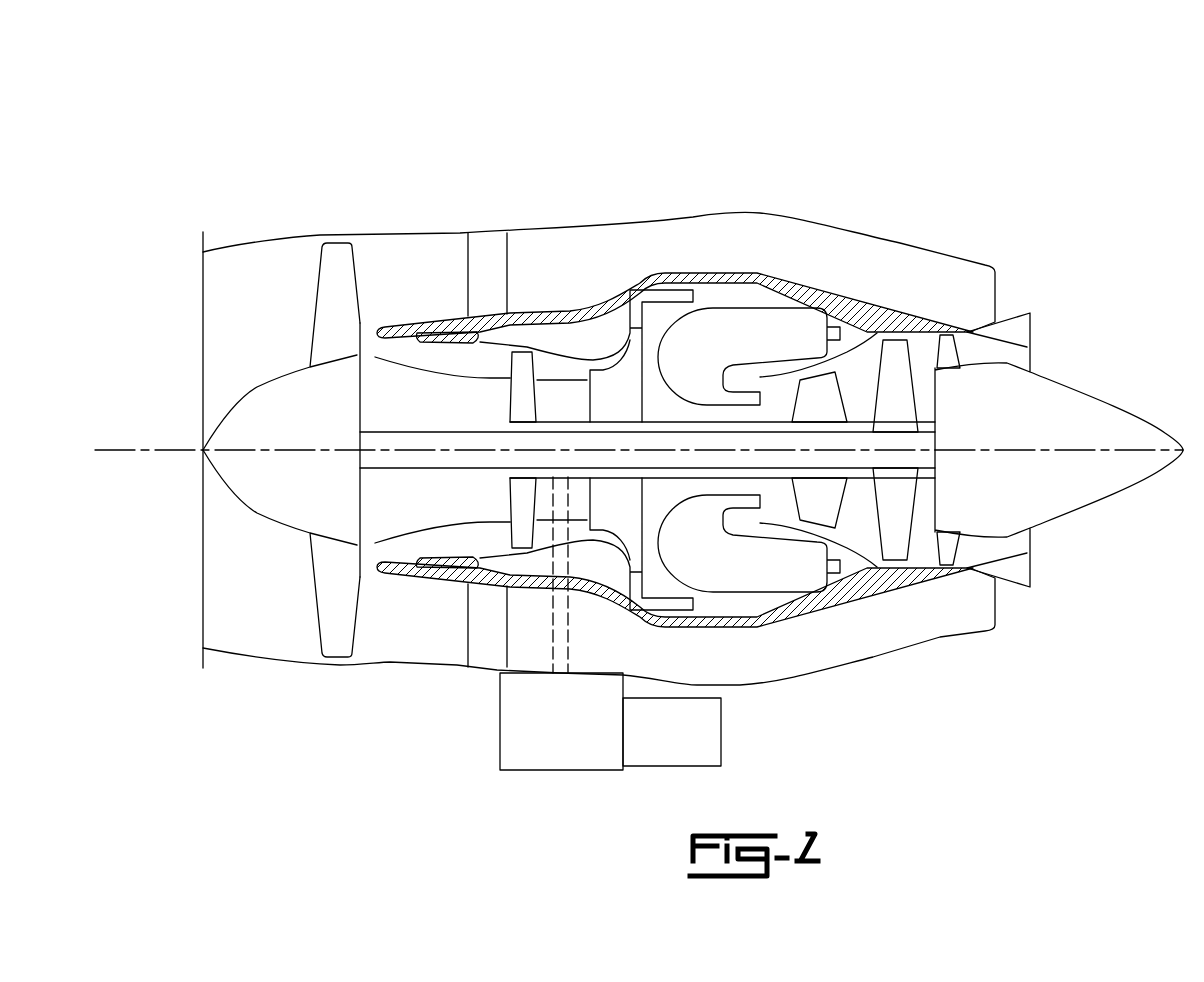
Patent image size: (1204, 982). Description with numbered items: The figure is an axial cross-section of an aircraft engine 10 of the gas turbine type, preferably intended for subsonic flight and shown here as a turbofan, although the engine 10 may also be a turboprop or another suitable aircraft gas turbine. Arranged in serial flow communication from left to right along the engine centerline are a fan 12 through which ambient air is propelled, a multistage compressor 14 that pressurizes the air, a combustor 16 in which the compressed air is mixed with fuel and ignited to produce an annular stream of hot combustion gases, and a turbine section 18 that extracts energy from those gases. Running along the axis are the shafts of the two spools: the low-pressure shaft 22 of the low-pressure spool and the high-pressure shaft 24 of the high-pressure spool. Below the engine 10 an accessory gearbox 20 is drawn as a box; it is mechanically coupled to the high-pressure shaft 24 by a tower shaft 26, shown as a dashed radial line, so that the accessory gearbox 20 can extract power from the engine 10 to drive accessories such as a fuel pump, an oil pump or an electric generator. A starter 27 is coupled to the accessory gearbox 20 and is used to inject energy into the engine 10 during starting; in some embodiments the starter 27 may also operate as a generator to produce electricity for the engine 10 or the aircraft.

The aircraft engine 10 is at (878, 155).
The fan 12 is at (332, 583).
The multistage compressor 14 is at (568, 365).
The combustor 16 is at (743, 325).
The turbine section 18 is at (858, 508).
The accessory gearbox 20 is at (532, 730).
The low-pressure shaft 22 is at (855, 425).
The high-pressure shaft 24 is at (556, 422).
The tower shaft 26 is at (553, 637).
The starter 27 is at (659, 762).